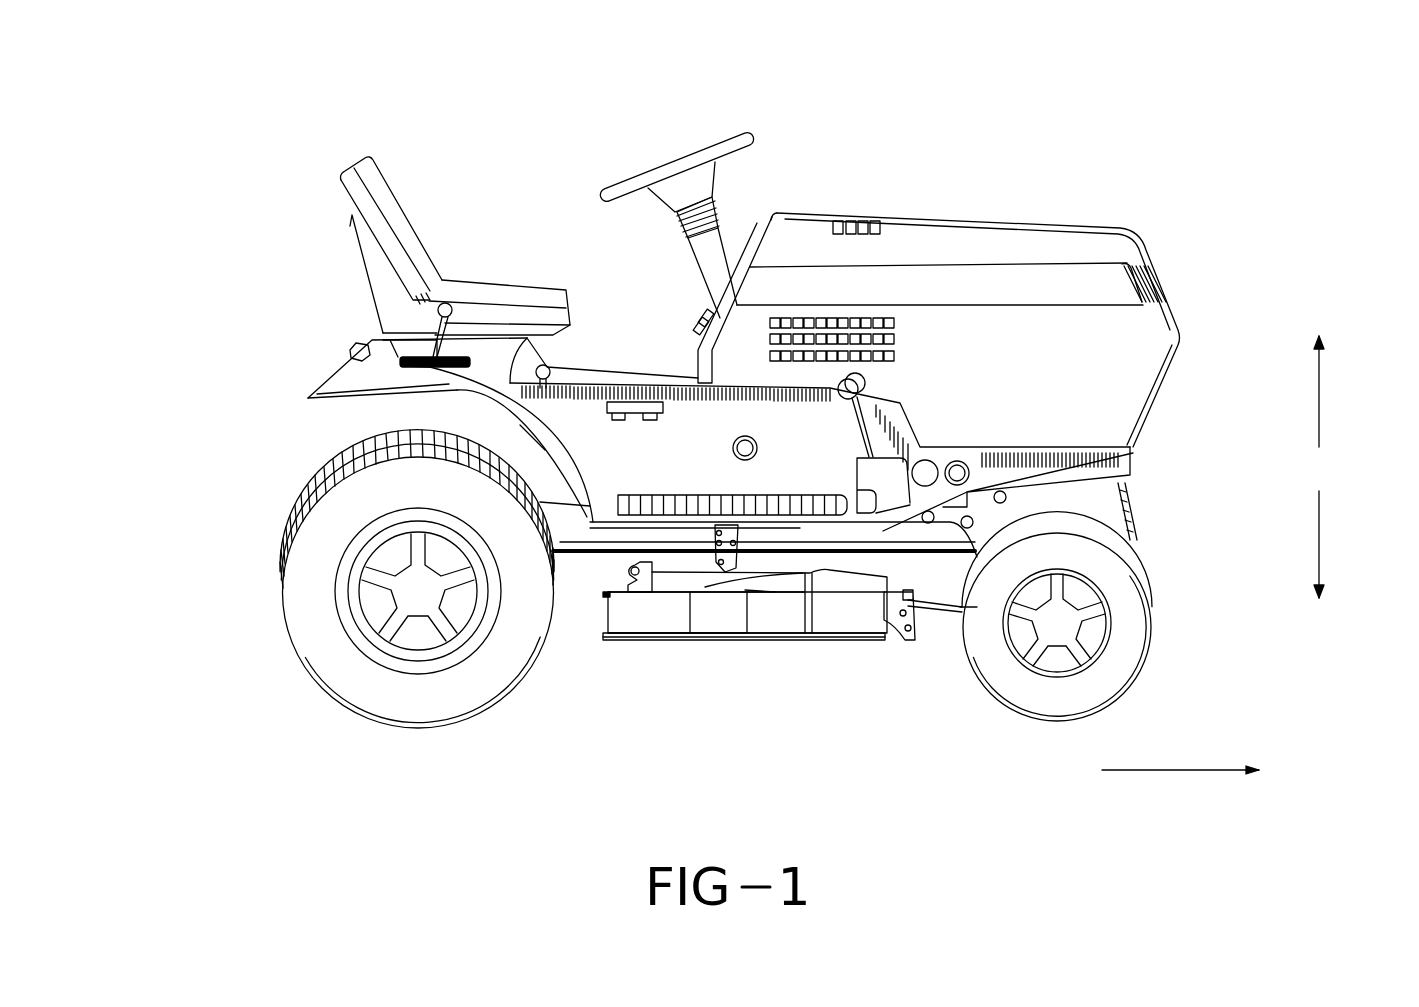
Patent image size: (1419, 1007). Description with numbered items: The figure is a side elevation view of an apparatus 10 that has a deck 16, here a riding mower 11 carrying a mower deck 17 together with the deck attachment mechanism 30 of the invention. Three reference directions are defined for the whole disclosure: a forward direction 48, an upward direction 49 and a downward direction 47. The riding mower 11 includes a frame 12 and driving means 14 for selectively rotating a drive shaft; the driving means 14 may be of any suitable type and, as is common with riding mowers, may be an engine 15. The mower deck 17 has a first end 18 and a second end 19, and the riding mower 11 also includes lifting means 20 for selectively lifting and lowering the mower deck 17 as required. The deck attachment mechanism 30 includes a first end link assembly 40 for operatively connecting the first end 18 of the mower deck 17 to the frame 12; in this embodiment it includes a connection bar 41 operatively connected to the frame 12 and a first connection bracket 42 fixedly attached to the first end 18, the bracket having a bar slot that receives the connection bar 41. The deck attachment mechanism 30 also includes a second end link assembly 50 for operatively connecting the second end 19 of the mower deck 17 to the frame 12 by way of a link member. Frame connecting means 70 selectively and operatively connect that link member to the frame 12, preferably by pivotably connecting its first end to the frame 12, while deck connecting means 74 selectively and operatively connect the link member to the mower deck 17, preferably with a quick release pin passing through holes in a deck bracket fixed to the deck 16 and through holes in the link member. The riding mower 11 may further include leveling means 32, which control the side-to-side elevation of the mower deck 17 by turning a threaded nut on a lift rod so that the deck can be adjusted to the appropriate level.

The apparatus 10 is at (1152, 112).
The riding mower 11 is at (917, 153).
The frame 12 is at (1130, 455).
The driving means 14 is at (1173, 248).
The engine 15 is at (1198, 278).
The deck 16 is at (700, 627).
The mower deck 17 is at (745, 625).
The first end 18 is at (908, 628).
The second end 19 is at (600, 625).
The lifting means 20 is at (297, 262).
The deck attachment mechanism 30 is at (742, 676).
The leveling means 32 is at (767, 692).
The first end link assembly 40 is at (925, 695).
The connection bar 41 is at (937, 613).
The first connection bracket 42 is at (918, 650).
The downward direction 47 is at (1319, 545).
The forward direction 48 is at (1172, 770).
The upward direction 49 is at (1319, 395).
The second end link assembly 50 is at (600, 578).
The frame connecting means 70 is at (712, 530).
The deck connecting means 74 is at (634, 564).